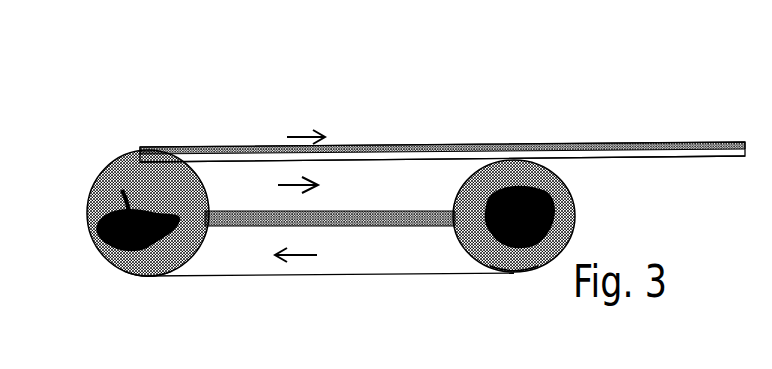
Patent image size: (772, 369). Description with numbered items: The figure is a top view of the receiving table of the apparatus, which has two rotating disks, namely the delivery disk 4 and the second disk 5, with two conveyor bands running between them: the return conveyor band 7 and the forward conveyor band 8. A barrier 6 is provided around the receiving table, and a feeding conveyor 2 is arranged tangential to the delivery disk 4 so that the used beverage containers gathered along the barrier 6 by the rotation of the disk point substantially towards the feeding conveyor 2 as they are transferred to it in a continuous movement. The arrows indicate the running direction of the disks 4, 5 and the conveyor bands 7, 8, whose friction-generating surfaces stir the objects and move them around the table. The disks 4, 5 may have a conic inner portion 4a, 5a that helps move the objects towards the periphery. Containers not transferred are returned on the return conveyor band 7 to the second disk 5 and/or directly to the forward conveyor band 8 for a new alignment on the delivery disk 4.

The feeding conveyor 2 is at (383, 148).
The delivery disk 4 is at (128, 172).
The conic inner portion 4a is at (148, 277).
The second disk 5 is at (500, 167).
The conic inner portion 5a is at (523, 272).
The barrier 6 is at (205, 276).
The return conveyor band 7 is at (430, 178).
The forward conveyor band 8 is at (388, 250).